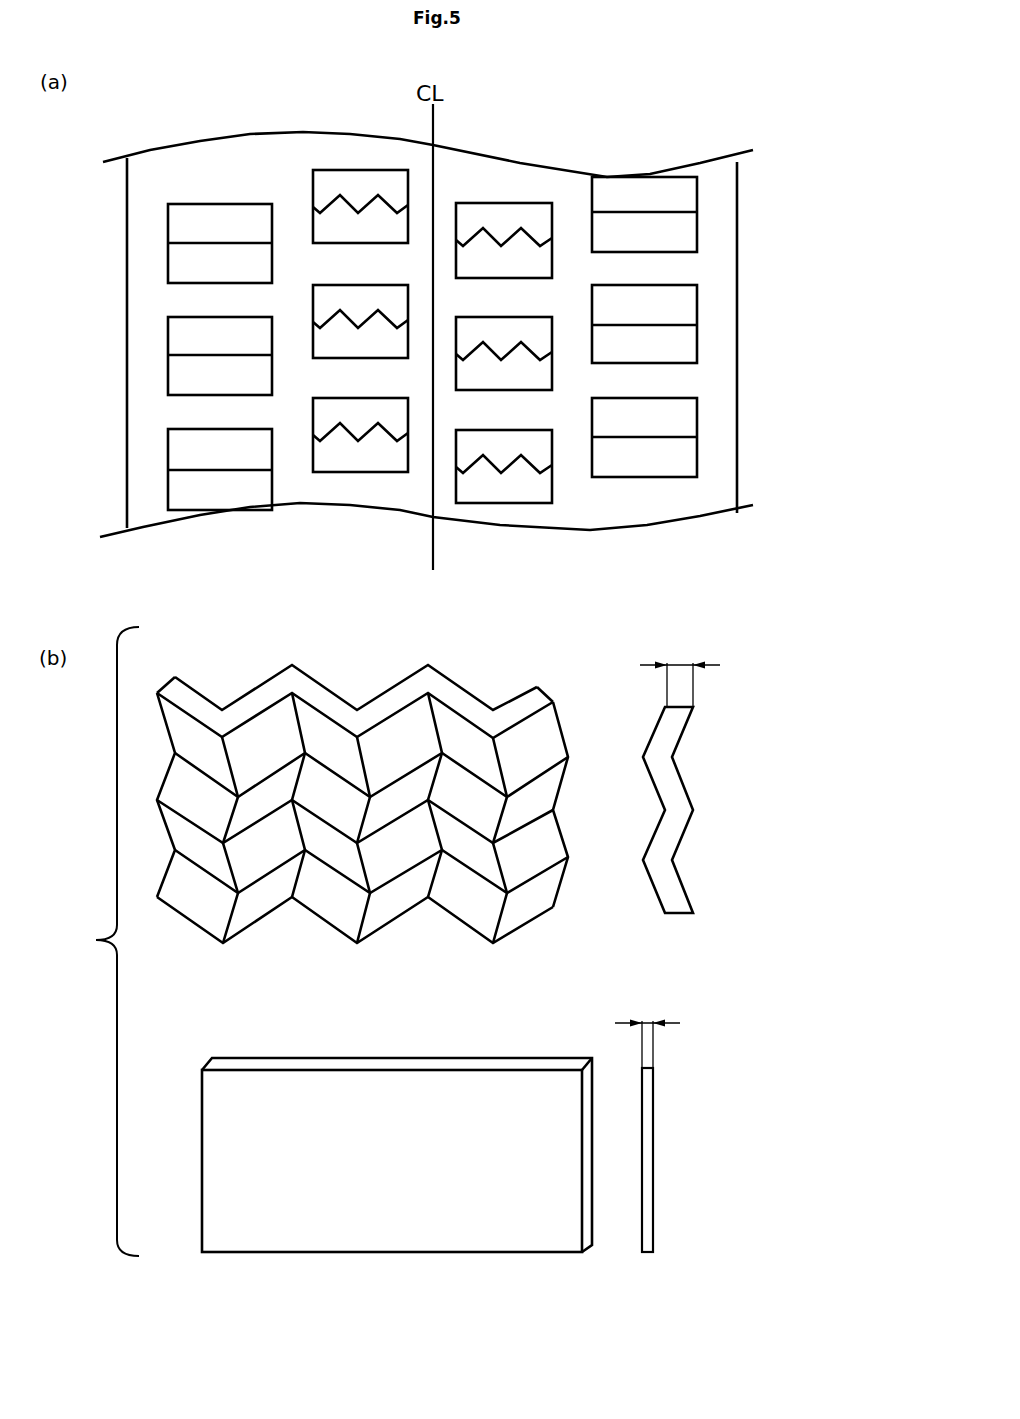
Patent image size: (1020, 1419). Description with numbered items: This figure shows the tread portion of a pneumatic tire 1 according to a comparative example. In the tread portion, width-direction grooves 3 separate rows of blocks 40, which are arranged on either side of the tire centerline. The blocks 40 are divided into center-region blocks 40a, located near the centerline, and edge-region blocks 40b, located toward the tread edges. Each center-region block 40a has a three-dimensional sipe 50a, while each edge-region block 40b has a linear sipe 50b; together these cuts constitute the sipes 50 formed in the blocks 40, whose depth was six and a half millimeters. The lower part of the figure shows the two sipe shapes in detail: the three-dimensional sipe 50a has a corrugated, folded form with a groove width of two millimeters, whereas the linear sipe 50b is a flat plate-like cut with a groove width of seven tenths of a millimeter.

The pneumatic tire 1 is at (678, 125).
The width-direction groove 3 is at (663, 272).
The block 40 is at (357, 83).
The center-region block 40a is at (330, 180).
The edge-region block 40b is at (247, 213).
The sipe 50 is at (50, 212).
The three-dimensional sipe 50a is at (313, 232).
The linear sipe 50b is at (213, 245).